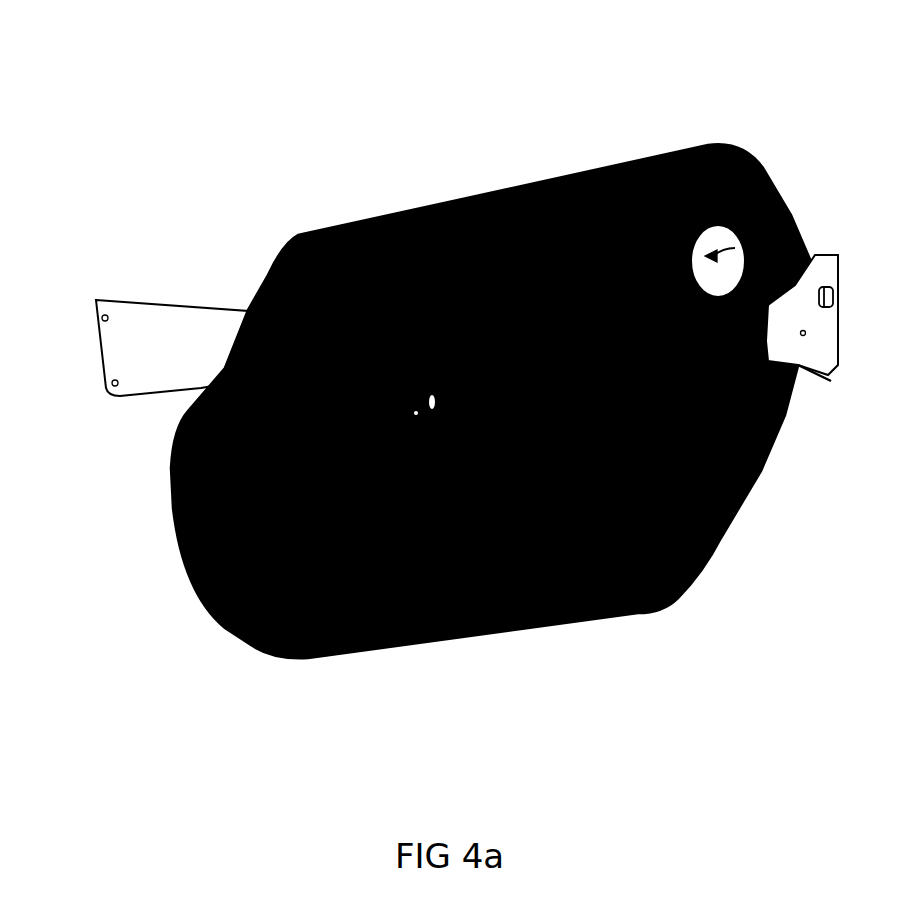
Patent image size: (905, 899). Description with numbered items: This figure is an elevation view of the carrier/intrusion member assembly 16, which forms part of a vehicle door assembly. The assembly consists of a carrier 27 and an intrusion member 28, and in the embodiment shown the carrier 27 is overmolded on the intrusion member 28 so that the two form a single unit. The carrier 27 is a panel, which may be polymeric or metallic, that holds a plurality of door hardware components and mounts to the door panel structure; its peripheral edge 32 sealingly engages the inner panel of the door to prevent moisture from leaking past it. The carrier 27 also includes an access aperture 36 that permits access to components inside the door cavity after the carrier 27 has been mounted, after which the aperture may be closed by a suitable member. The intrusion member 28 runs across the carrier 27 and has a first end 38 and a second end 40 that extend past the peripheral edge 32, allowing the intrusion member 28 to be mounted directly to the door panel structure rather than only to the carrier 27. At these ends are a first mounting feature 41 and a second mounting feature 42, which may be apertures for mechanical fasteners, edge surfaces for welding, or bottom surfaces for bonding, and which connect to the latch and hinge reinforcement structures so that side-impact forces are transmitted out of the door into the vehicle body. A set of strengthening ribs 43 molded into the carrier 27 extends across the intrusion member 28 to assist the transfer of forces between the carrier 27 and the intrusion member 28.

The carrier/intrusion member assembly 16 is at (454, 339).
The carrier 27 is at (551, 250).
The intrusion member 28 is at (205, 312).
The peripheral edge 32 is at (322, 228).
The access aperture 36 is at (750, 265).
The first end 38 is at (815, 267).
The second end 40 is at (172, 284).
The first mounting feature 41 is at (796, 322).
The second mounting feature 42 is at (107, 372).
The strengthening ribs 43 is at (337, 492).